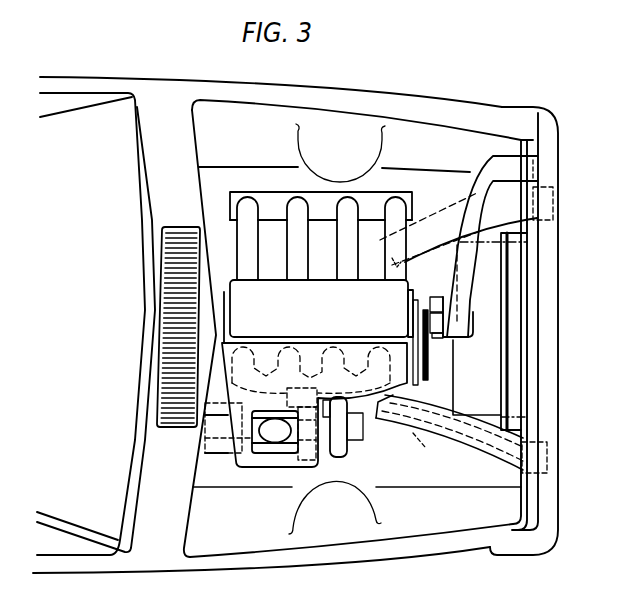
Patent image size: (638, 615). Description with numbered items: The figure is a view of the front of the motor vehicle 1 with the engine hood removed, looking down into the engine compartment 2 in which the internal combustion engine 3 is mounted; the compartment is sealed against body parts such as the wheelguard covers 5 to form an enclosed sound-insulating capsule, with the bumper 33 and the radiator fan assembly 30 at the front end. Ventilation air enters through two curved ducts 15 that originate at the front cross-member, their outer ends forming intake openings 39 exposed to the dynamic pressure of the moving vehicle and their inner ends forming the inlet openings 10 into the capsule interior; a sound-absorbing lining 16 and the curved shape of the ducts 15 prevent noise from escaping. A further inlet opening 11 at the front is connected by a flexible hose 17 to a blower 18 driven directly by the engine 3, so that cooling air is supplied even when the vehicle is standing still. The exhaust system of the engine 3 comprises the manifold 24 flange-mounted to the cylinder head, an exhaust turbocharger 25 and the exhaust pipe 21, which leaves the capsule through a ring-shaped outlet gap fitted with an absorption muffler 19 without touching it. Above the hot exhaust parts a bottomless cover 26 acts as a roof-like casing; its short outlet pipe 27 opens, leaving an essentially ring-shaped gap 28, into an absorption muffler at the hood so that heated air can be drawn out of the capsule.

The vehicle 1 is at (80, 74).
The engine compartment 2 is at (434, 280).
The internal combustion engine 3 is at (319, 314).
The wheelguard covers 5 is at (417, 137).
The inlet openings 10 is at (384, 243).
The inlet opening 11 is at (537, 167).
The curved ducts 15 is at (432, 220).
The sound-absorbing lining 16 is at (458, 463).
The flexible hose 17 is at (491, 167).
The blower 18 is at (434, 340).
The absorption muffler 19 is at (218, 445).
The exhaust pipe 21 is at (208, 428).
The manifold 24 is at (257, 341).
The exhaust turbocharger 25 is at (344, 458).
The cover 26 is at (243, 462).
The outlet pipe 27 is at (273, 437).
The ring-shaped gap 28 is at (288, 453).
The radiator fan assembly 30 is at (498, 373).
The bumper 33 is at (557, 292).
The intake openings 39 is at (553, 203).